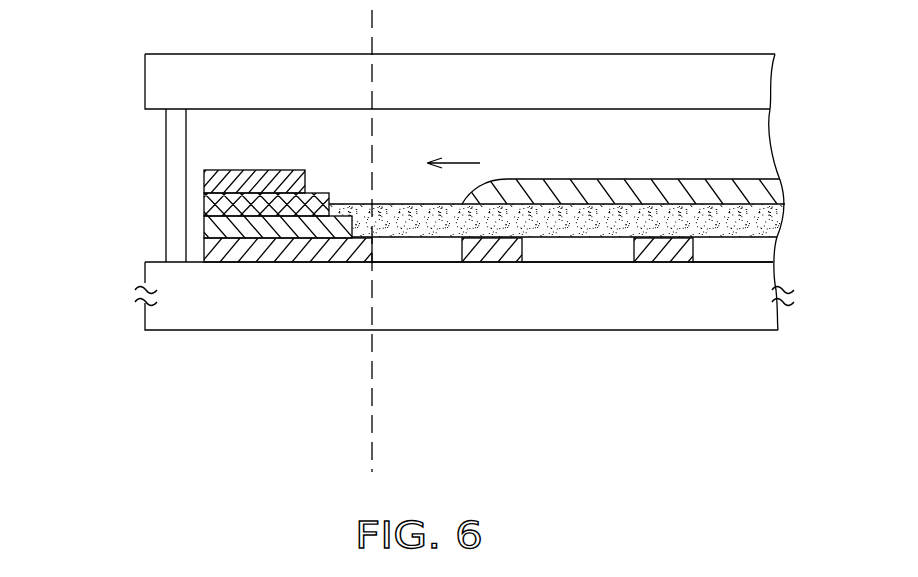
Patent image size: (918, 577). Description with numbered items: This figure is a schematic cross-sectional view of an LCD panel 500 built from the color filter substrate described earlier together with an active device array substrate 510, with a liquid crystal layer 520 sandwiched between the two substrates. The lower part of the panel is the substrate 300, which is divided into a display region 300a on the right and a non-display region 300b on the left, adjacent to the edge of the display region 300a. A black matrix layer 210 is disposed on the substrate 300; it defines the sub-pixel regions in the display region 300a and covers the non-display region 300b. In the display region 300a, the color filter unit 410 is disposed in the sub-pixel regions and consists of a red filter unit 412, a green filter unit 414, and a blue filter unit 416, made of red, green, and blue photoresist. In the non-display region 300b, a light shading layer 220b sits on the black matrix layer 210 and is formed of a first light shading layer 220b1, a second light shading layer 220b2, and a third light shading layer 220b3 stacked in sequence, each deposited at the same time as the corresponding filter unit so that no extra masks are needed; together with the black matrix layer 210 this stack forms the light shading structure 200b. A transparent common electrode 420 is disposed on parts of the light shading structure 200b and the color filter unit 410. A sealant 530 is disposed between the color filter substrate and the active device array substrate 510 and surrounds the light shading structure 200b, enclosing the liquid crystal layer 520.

The active device array substrate 510 is at (760, 90).
The liquid crystal layer 520 is at (702, 190).
The common electrode 420 is at (770, 228).
The sealant 530 is at (173, 129).
The light shading layer 220b is at (187, 192).
The first light shading layer 220b1 is at (203, 230).
The second light shading layer 220b2 is at (203, 205).
The third light shading layer 220b3 is at (203, 177).
The black matrix layer 210 is at (205, 248).
The substrate 300 is at (157, 317).
The light shading structure 200b is at (266, 279).
The color filter unit 410 is at (572, 335).
The red filter unit 412 is at (415, 252).
The green filter unit 414 is at (583, 253).
The blue filter unit 416 is at (730, 314).
The non-display region 300b is at (367, 447).
The display region 300a is at (378, 448).
The LCD panel 500 is at (782, 407).